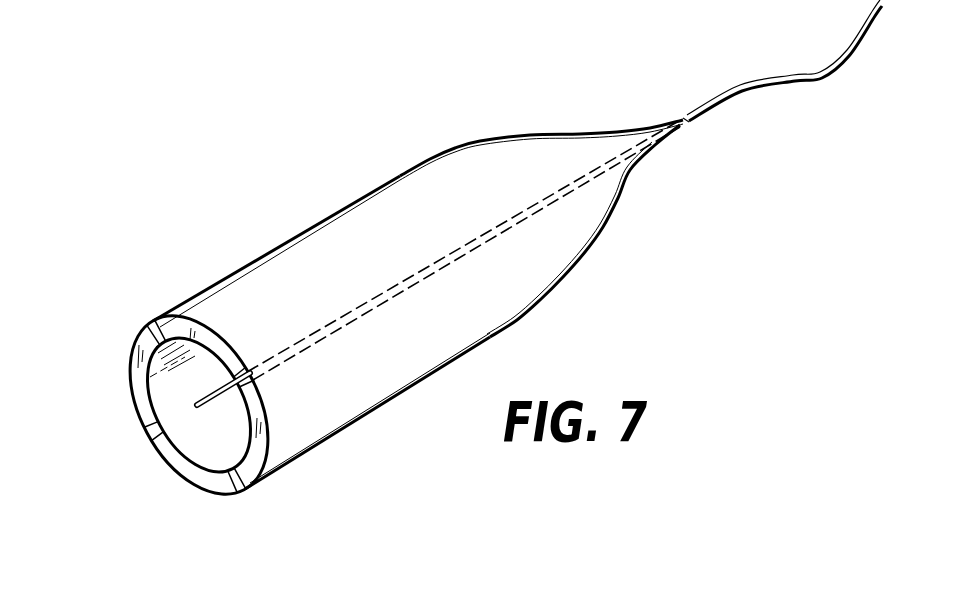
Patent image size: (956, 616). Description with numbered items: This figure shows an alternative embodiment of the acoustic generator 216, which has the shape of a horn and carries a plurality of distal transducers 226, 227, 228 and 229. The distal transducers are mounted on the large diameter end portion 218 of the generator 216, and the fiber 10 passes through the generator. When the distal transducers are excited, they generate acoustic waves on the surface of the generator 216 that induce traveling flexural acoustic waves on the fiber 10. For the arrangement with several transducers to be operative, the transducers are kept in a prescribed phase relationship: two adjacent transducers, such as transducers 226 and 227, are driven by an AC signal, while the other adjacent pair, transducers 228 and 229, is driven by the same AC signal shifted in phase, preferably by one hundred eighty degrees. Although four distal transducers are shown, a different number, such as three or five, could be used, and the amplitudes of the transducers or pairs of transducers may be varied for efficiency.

The fiber 10 is at (742, 85).
The generator 216 is at (488, 138).
The large diameter end portion 218 is at (355, 418).
The distal transducer 226 is at (197, 327).
The distal transducer 227 is at (265, 443).
The distal transducer 228 is at (185, 473).
The distal transducer 229 is at (130, 382).